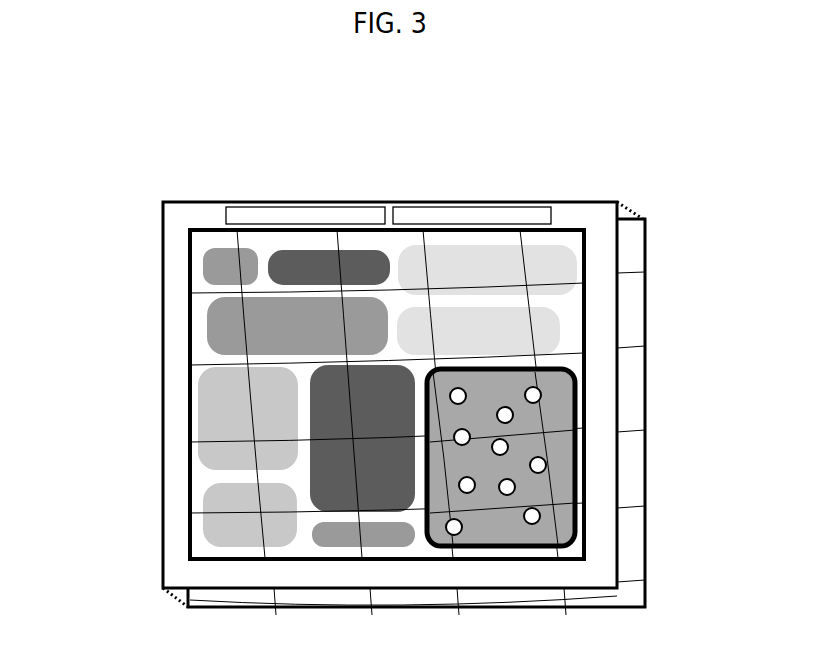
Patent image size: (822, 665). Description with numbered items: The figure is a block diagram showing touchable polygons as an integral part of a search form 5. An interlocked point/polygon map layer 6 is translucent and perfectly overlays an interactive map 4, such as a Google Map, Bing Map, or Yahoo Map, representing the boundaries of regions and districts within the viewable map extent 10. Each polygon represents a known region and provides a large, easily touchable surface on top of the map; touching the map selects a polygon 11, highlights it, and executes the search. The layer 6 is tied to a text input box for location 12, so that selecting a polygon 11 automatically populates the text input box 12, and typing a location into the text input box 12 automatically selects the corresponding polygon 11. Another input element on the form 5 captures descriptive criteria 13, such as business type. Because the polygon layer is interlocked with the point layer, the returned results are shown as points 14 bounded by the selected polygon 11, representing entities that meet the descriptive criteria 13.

The interactive map 4 is at (640, 437).
The search form 5 is at (602, 262).
The interlocked point/polygon map layer 6 is at (205, 393).
The map extent 10 is at (190, 539).
The selected polygon 11 is at (558, 549).
The text input box for location 12 is at (275, 182).
The descriptive input element 13 is at (425, 212).
The points 14 is at (538, 516).